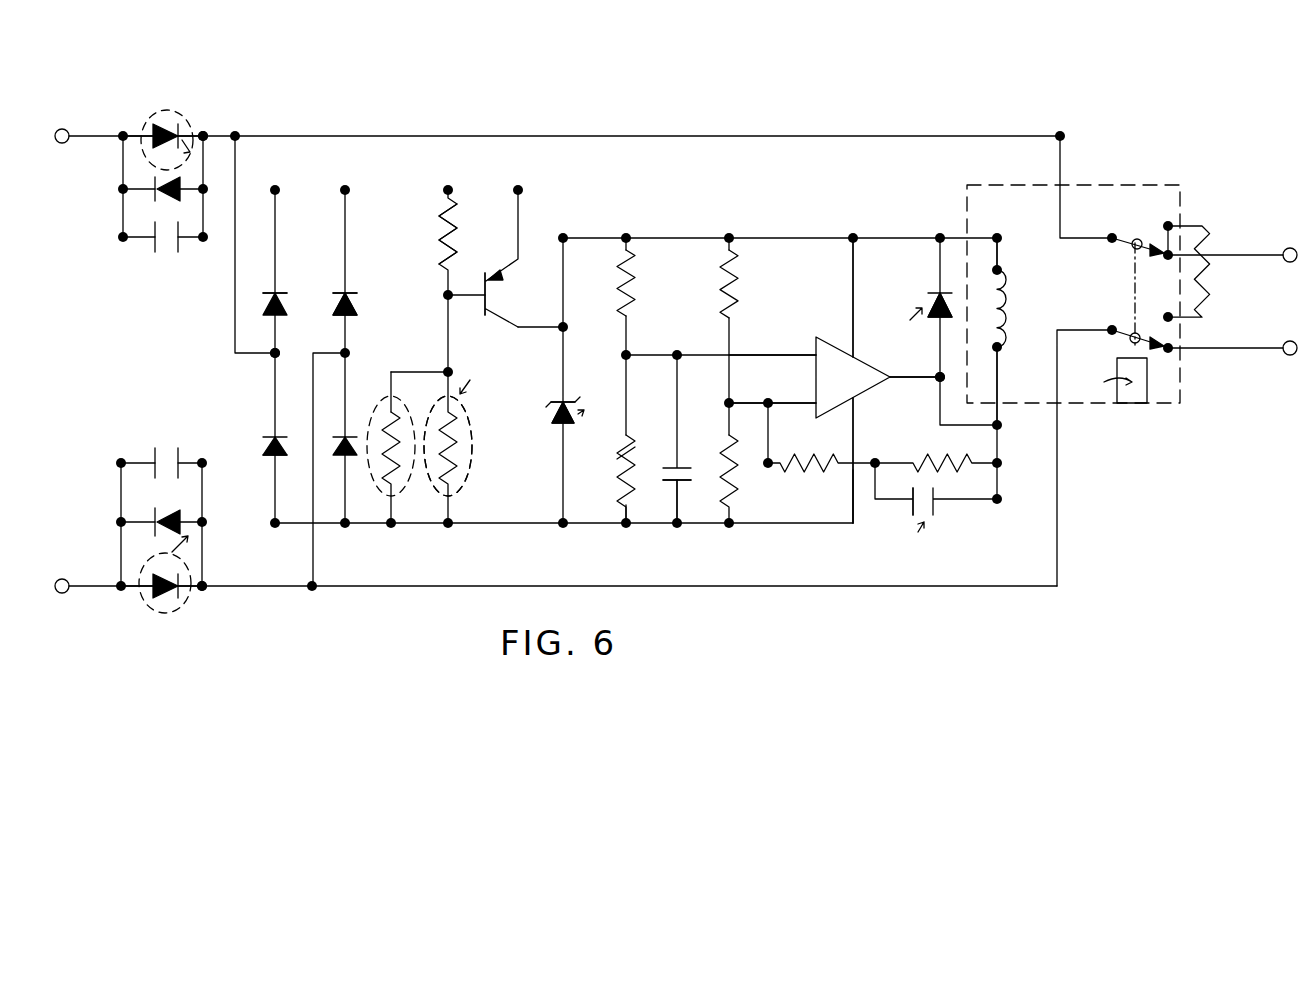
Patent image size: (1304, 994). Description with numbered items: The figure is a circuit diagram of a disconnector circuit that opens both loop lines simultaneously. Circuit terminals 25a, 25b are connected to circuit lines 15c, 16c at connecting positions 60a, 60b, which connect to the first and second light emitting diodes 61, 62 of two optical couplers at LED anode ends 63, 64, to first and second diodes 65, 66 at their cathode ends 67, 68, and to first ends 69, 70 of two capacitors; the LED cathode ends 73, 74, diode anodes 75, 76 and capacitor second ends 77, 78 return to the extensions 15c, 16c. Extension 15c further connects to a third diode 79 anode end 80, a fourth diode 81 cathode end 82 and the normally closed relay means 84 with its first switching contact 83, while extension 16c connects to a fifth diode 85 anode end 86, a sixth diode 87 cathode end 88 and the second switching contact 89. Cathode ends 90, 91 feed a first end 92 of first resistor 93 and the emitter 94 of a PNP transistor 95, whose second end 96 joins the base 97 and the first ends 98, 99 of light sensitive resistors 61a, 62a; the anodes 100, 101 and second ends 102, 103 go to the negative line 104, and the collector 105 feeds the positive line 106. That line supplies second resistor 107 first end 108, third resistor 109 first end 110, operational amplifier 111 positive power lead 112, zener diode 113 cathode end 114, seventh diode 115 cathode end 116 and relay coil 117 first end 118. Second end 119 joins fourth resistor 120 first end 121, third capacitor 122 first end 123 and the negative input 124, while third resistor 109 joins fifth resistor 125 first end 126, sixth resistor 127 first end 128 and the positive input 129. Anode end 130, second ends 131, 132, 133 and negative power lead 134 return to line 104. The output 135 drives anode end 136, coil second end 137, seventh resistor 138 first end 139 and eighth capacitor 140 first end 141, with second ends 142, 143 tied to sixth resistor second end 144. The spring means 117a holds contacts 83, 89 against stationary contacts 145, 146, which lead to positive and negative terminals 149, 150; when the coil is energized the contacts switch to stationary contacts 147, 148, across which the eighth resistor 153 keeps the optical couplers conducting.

The circuit line 15c is at (279, 145).
The circuit line 16c is at (290, 590).
The negative line 104 is at (520, 526).
The positive line 106 is at (693, 238).
The circuit terminal 25a is at (66, 128).
The circuit terminal 25b is at (80, 592).
The connecting position 60a is at (114, 148).
The connecting position 60b is at (106, 590).
The first light emitting diode 61 is at (196, 111).
The second light emitting diode 62 is at (188, 598).
The LED anode end 63 is at (170, 120).
The LED anode end 64 is at (154, 572).
The first diode 65 is at (148, 210).
The second diode 66 is at (182, 498).
The cathode end 67 is at (140, 192).
The cathode end 68 is at (126, 510).
The first end 69 is at (146, 242).
The first end 70 is at (138, 460).
The LED cathode end 73 is at (196, 130).
The LED cathode end 74 is at (190, 580).
The first diode anode 75 is at (190, 198).
The second diode anode 76 is at (186, 520).
The first capacitor second end 77 is at (186, 242).
The second capacitor second end 78 is at (188, 462).
The third diode 79 is at (242, 292).
The anode end 80 is at (266, 307).
The fourth diode 81 is at (294, 414).
The cathode end 82 is at (266, 436).
The first switching contact 83 is at (1118, 246).
The relay means 84 is at (1072, 186).
The fifth diode 85 is at (369, 309).
The anode end 86 is at (356, 316).
The sixth diode 87 is at (330, 431).
The cathode end 88 is at (380, 388).
The second switching contact 89 is at (1122, 346).
The cathode end 90 is at (284, 292).
The cathode end 91 is at (354, 288).
The first end 92 is at (444, 203).
The first resistor 93 is at (442, 238).
The emitter 94 is at (506, 260).
The PNP transistor 95 is at (499, 293).
The second end 96 is at (440, 286).
The base 97 is at (462, 300).
The first end 98 is at (434, 388).
The first end 99 is at (394, 372).
The anode 100 is at (264, 458).
The anode 101 is at (338, 456).
The second end 102 is at (475, 486).
The second end 103 is at (377, 479).
The collector 105 is at (502, 324).
The second resistor 107 is at (636, 286).
The second resistor first end 108 is at (626, 248).
The third resistor 109 is at (738, 292).
The first end 110 is at (734, 252).
The operational amplifier 111 is at (852, 374).
The positive power lead 112 is at (856, 296).
The zener diode 113 is at (586, 420).
The cathode end 114 is at (572, 398).
The seventh diode 115 is at (915, 313).
The cathode end 116 is at (928, 288).
The relay coil 117 is at (1012, 304).
The spring means 117a is at (1107, 380).
The first end 118 is at (1000, 255).
The second end 119 is at (630, 332).
The fourth resistor 120 is at (614, 460).
The first end 121 is at (638, 388).
The third capacitor 122 is at (702, 452).
The first end 123 is at (662, 460).
The negative input 124 is at (790, 354).
The fifth resistor 125 is at (740, 480).
The first end 126 is at (728, 434).
The sixth resistor 127 is at (806, 470).
The first end 128 is at (770, 448).
The positive input 129 is at (790, 402).
The anode end 130 is at (552, 438).
The second end 131 is at (614, 510).
The second end 132 is at (674, 502).
The second end 133 is at (724, 508).
The negative power lead 134 is at (864, 426).
The output 135 is at (916, 380).
The anode end 136 is at (924, 356).
The second end 137 is at (1000, 370).
The seventh resistor 138 is at (930, 458).
The first end 139 is at (998, 460).
The eighth capacitor 140 is at (936, 509).
The first end 141 is at (975, 500).
The second end 142 is at (878, 462).
The second end 143 is at (886, 504).
The second end 144 is at (858, 470).
The first stationary relay contact 145 is at (1168, 262).
The second stationary relay contact 146 is at (1172, 350).
The third stationary contact 147 is at (1174, 218).
The fourth stationary contact 148 is at (1160, 316).
The positive terminal 149 is at (1288, 248).
The negative terminal 150 is at (1292, 356).
The eighth resistor 153 is at (1210, 278).
The light sensitive resistor 61a is at (460, 414).
The light sensitive resistor 62a is at (404, 488).